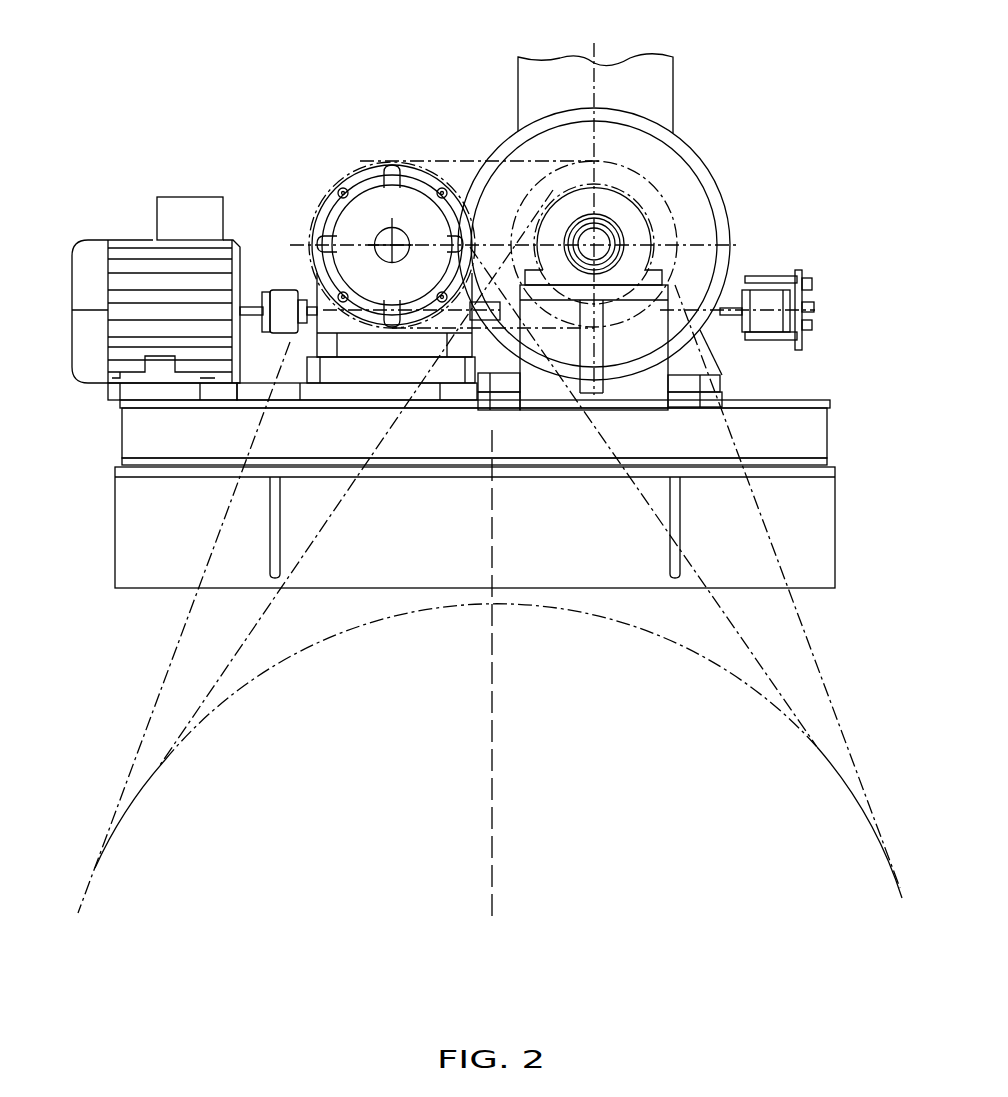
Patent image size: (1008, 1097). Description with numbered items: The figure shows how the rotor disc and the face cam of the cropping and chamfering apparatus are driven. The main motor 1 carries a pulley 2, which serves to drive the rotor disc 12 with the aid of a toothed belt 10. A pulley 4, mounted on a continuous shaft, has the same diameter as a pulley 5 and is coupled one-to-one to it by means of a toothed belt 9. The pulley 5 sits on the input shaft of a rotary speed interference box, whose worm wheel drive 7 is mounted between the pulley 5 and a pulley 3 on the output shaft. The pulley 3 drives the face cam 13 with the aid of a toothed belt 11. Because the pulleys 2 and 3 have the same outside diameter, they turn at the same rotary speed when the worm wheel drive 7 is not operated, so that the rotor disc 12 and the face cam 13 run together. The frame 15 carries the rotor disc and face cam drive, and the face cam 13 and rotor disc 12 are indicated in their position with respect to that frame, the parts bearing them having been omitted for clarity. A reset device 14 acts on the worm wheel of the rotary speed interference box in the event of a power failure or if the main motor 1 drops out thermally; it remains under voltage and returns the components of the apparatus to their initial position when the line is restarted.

The main motor 1 is at (713, 192).
The pulley 2 is at (630, 208).
The pulley 3 is at (367, 210).
The pulley 4 is at (617, 167).
The pulley 5 is at (377, 167).
The worm wheel drive 7 is at (90, 252).
The toothed belt 9 is at (465, 157).
The toothed belt 10 is at (812, 650).
The toothed belt 11 is at (165, 678).
The rotor disc 12 is at (817, 802).
The face cam 13 is at (817, 802).
The reset device 14 is at (763, 300).
The frame 15 is at (822, 503).